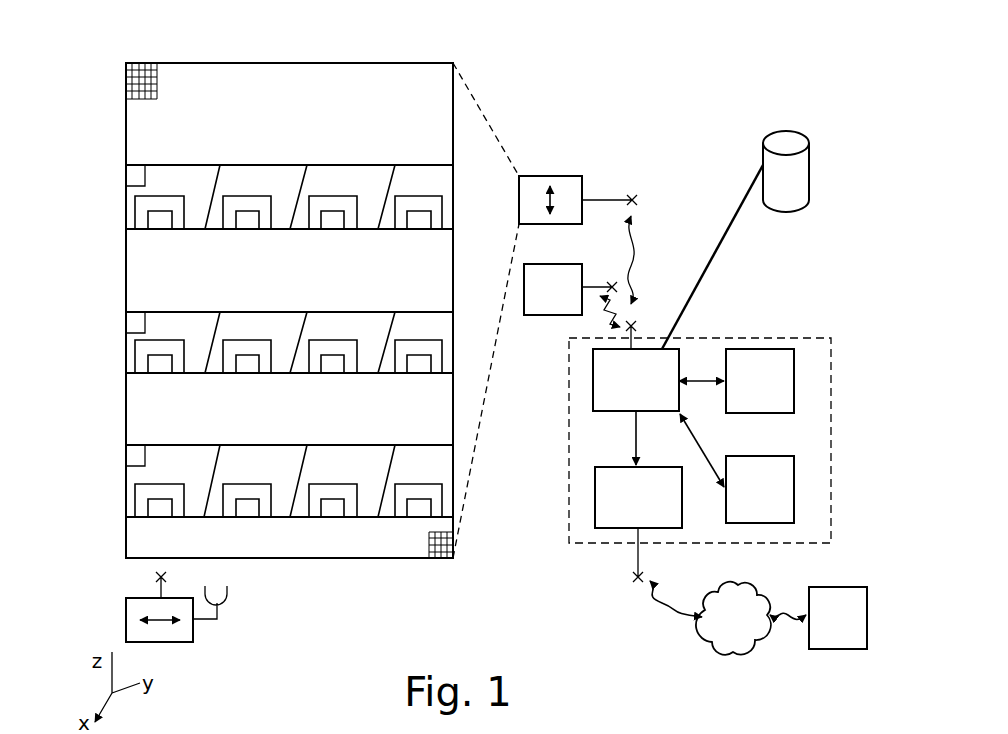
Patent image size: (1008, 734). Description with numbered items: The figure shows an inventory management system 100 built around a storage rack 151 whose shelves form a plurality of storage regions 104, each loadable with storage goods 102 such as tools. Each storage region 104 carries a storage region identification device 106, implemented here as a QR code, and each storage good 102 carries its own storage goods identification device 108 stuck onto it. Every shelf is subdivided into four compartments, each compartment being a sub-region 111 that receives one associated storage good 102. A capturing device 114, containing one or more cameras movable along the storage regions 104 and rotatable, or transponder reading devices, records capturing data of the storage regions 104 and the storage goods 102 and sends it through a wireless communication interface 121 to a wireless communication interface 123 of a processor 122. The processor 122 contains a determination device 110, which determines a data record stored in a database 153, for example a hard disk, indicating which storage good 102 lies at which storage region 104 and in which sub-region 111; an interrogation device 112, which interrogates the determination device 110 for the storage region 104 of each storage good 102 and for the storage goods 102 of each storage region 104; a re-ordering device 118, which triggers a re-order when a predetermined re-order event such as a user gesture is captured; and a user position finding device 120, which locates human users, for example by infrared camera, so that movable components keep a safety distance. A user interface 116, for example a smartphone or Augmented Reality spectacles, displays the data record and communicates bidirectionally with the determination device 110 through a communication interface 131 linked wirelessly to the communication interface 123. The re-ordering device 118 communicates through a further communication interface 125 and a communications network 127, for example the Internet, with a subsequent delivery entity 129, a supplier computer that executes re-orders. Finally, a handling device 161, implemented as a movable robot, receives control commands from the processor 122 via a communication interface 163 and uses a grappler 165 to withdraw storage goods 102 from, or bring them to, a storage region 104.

The inventory management system 100 is at (98, 96).
The storage goods 102 is at (162, 202).
The storage regions 104 is at (120, 165).
The storage region identification device 106 is at (138, 80).
The storage goods identification device 108 is at (162, 220).
The determination device 110 is at (593, 375).
The sub-region 111 is at (196, 185).
The interrogation device 112 is at (794, 378).
The capturing device 114 is at (548, 176).
The user interface 116 is at (547, 315).
The re-ordering device 118 is at (595, 480).
The user position finding device 120 is at (794, 491).
The communication interface 121 is at (631, 195).
The processor 122 is at (744, 338).
The communication interface 123 is at (638, 322).
The communication interface 125 is at (632, 579).
The communications network 127 is at (703, 634).
The subsequent delivery entity 129 is at (808, 641).
The communication interface 131 is at (610, 284).
The storage rack 151 is at (329, 61).
The database 153 is at (797, 172).
The handling device 161 is at (142, 611).
The communication interface 163 is at (156, 577).
The grappler 165 is at (232, 587).